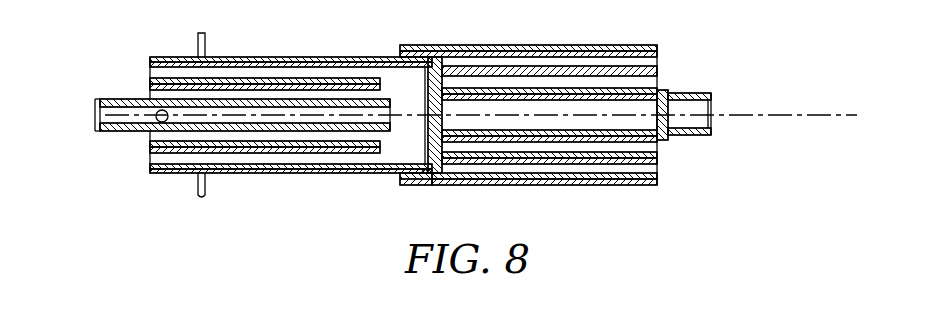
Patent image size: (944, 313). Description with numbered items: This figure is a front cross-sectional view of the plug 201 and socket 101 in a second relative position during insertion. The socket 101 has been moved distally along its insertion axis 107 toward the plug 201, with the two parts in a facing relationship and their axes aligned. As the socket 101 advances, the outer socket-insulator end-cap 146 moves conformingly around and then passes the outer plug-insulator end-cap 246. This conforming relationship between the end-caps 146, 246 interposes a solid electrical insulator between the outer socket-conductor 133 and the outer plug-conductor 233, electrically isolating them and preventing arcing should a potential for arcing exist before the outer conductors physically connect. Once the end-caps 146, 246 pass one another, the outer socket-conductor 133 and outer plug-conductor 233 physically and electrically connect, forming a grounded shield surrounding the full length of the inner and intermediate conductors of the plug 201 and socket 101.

The socket 101 is at (568, 45).
The insertion axis 107 is at (784, 116).
The outer socket-conductor 133 is at (553, 185).
The outer socket-insulator end-cap 146 is at (404, 182).
The plug 201 is at (265, 57).
The outer plug-conductor 233 is at (256, 175).
The outer plug-insulator end-cap 246 is at (431, 174).